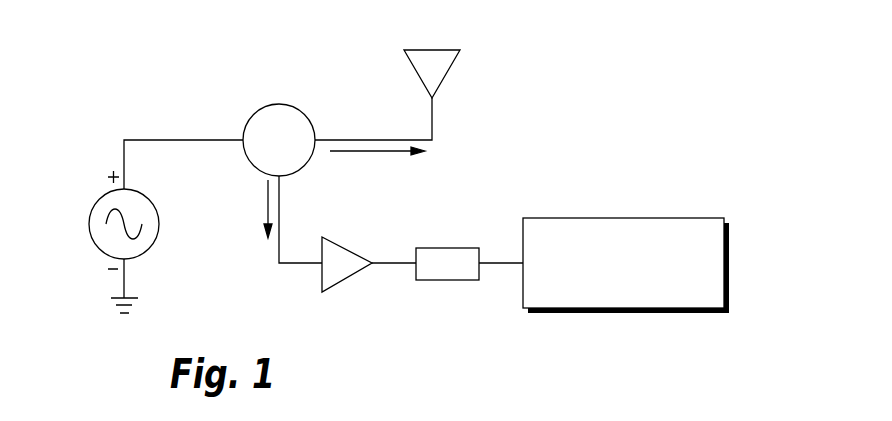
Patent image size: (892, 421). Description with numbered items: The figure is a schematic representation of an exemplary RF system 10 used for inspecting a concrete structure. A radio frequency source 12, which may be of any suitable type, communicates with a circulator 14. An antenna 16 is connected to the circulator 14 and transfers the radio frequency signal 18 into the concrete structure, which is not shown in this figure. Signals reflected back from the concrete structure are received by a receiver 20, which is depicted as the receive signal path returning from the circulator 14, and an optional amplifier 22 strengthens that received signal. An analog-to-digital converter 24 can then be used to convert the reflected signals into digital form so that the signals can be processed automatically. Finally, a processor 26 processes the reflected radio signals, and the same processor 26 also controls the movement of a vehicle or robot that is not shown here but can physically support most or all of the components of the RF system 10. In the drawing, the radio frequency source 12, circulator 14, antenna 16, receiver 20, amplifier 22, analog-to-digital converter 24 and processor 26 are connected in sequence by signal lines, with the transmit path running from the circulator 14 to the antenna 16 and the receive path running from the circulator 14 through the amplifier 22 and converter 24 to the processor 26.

The RF system 10 is at (666, 67).
The radio frequency source 12 is at (83, 145).
The circulator 14 is at (233, 78).
The antenna 16 is at (442, 58).
The radio frequency signal 18 is at (427, 152).
The receiver 20 is at (238, 240).
The amplifier 22 is at (325, 277).
The analog-to-digital converter 24 is at (420, 249).
The processor 26 is at (660, 200).